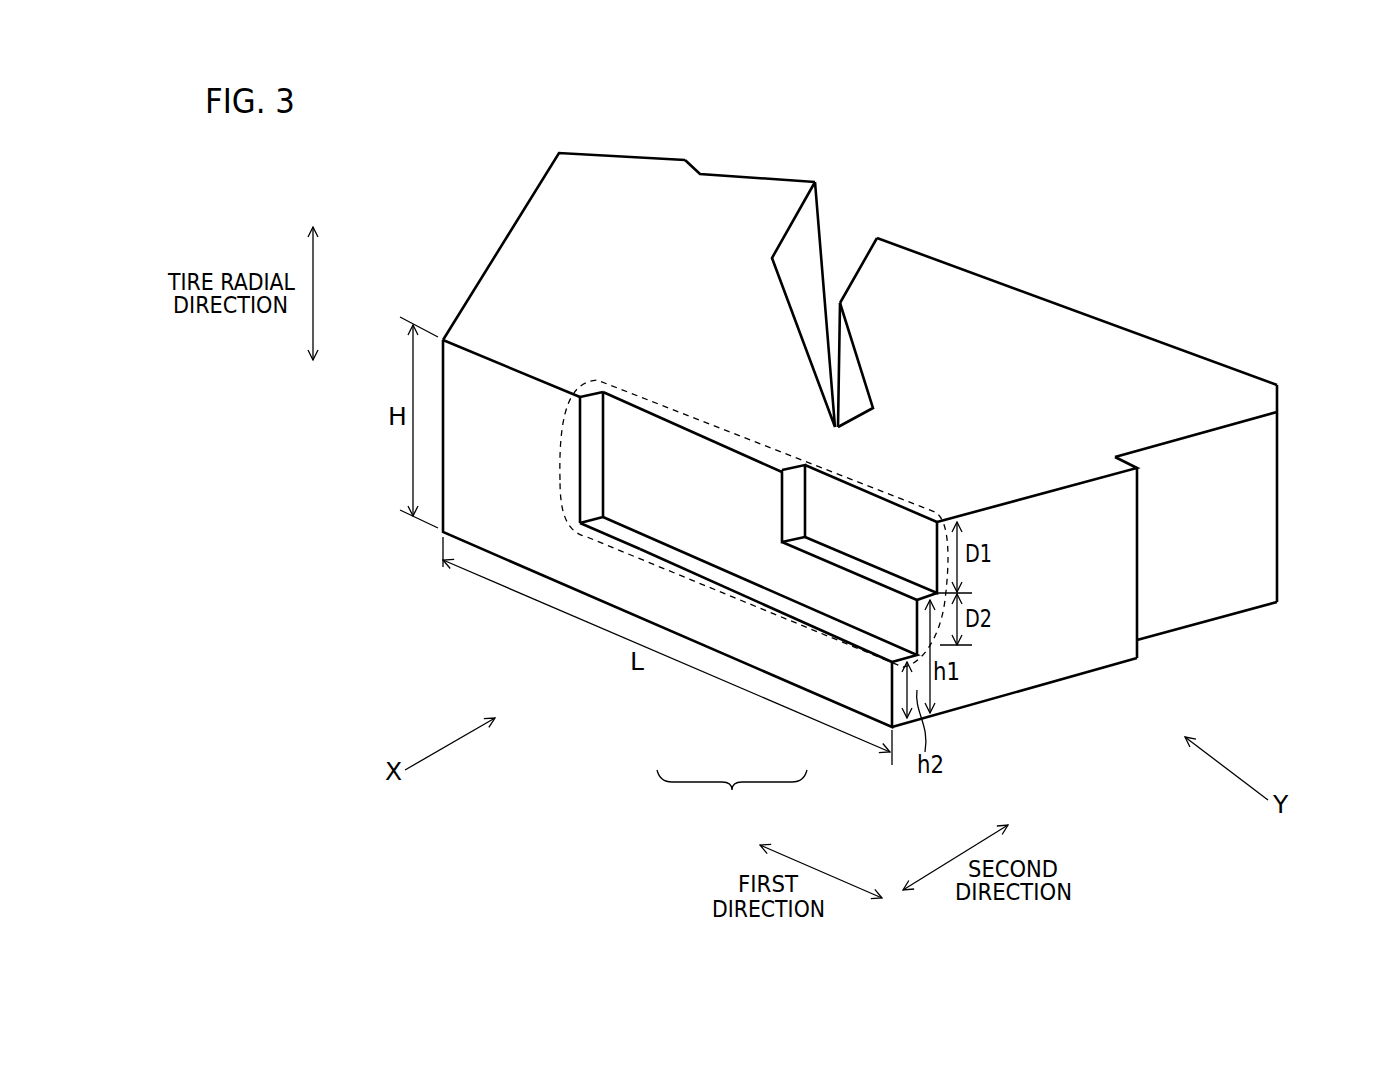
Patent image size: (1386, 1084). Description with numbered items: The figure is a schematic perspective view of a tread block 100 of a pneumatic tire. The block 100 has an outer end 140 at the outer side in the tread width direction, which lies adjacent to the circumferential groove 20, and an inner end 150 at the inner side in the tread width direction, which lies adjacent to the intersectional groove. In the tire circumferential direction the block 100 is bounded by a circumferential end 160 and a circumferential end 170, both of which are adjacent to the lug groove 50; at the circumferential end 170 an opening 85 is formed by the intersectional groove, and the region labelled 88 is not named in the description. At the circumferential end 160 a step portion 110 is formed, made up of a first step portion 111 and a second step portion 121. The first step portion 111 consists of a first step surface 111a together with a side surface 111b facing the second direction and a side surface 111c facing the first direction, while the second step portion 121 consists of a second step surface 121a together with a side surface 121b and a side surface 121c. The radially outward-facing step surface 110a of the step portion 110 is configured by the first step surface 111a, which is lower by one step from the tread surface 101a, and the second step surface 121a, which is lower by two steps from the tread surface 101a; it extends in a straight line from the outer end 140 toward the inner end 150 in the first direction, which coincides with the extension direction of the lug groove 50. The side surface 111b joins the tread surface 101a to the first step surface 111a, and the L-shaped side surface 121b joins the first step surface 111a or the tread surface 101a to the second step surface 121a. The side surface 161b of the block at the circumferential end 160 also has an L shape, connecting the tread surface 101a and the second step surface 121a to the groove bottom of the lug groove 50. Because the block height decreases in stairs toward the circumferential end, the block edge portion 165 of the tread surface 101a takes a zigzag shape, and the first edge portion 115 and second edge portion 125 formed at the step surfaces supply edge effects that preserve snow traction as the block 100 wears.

The circumferential groove 20 is at (1262, 647).
The lug groove 50 is at (378, 548).
The opening 85 is at (843, 235).
The sipe bottom 88 is at (847, 397).
The block 100 is at (1088, 218).
The tread surface 101a is at (720, 203).
The step portion 110 is at (937, 513).
The step surface 110a is at (732, 794).
The first step portion 111 is at (848, 538).
The first step surface 111a is at (850, 573).
The side surface 111b is at (877, 520).
The side surface 111c is at (795, 507).
The first edge portion 115 is at (858, 575).
The second step portion 121 is at (735, 558).
The second step surface 121a is at (760, 597).
The side surface 121b is at (698, 455).
The side surface 121c is at (593, 457).
The second edge portion 125 is at (600, 537).
The outer end 140 is at (1080, 518).
The inner end 150 is at (468, 290).
The circumferential end 160 is at (503, 527).
The side surface 161b is at (523, 390).
The block edge portion 165 is at (550, 378).
The circumferential end 170 is at (1265, 373).